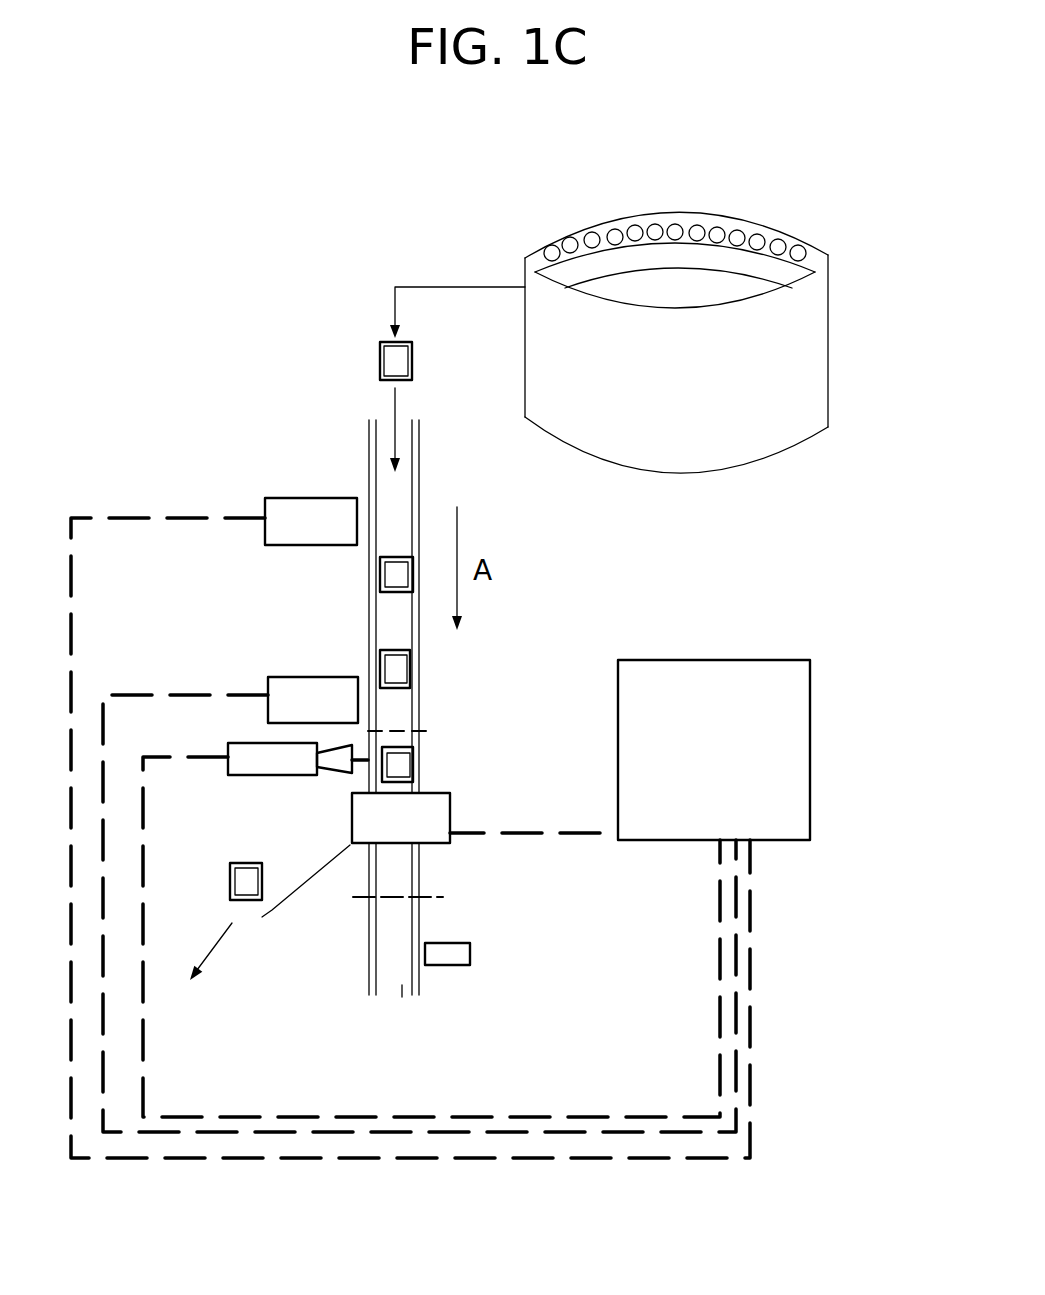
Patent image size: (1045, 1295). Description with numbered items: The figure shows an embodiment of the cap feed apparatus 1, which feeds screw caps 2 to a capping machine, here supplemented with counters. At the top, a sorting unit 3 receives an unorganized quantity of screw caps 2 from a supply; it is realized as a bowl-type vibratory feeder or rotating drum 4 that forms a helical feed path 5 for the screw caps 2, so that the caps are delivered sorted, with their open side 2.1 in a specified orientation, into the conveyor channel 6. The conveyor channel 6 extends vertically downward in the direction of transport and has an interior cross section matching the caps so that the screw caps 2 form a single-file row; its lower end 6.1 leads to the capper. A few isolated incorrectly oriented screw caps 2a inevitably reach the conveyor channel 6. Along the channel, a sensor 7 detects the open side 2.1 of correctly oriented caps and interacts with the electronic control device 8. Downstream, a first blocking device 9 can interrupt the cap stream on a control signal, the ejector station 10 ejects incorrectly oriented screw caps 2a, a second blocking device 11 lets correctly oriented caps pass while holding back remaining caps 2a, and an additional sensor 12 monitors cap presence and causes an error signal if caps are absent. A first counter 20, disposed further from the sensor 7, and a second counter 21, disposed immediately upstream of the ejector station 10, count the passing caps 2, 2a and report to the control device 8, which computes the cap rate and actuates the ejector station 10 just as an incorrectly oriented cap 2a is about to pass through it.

The apparatus 1 is at (318, 260).
The screw cap 2 is at (439, 467).
The open side 2.1 is at (397, 357).
The incorrectly oriented screw cap 2a is at (366, 763).
The sorting unit 3 is at (714, 323).
The bowl-type vibratory feeder 4 is at (713, 348).
The helical feed path 5 is at (675, 290).
The conveyor channel 6 is at (340, 468).
The lower end of conveyor channel 6.1 is at (374, 1024).
The sensor 7 is at (273, 762).
The electronic control device 8 is at (730, 775).
The first blocking device 9 is at (453, 709).
The ejector station 10 is at (435, 812).
The second blocking device 11 is at (434, 879).
The additional sensor 12 is at (470, 953).
The first counter 20 is at (330, 537).
The second counter 21 is at (332, 716).